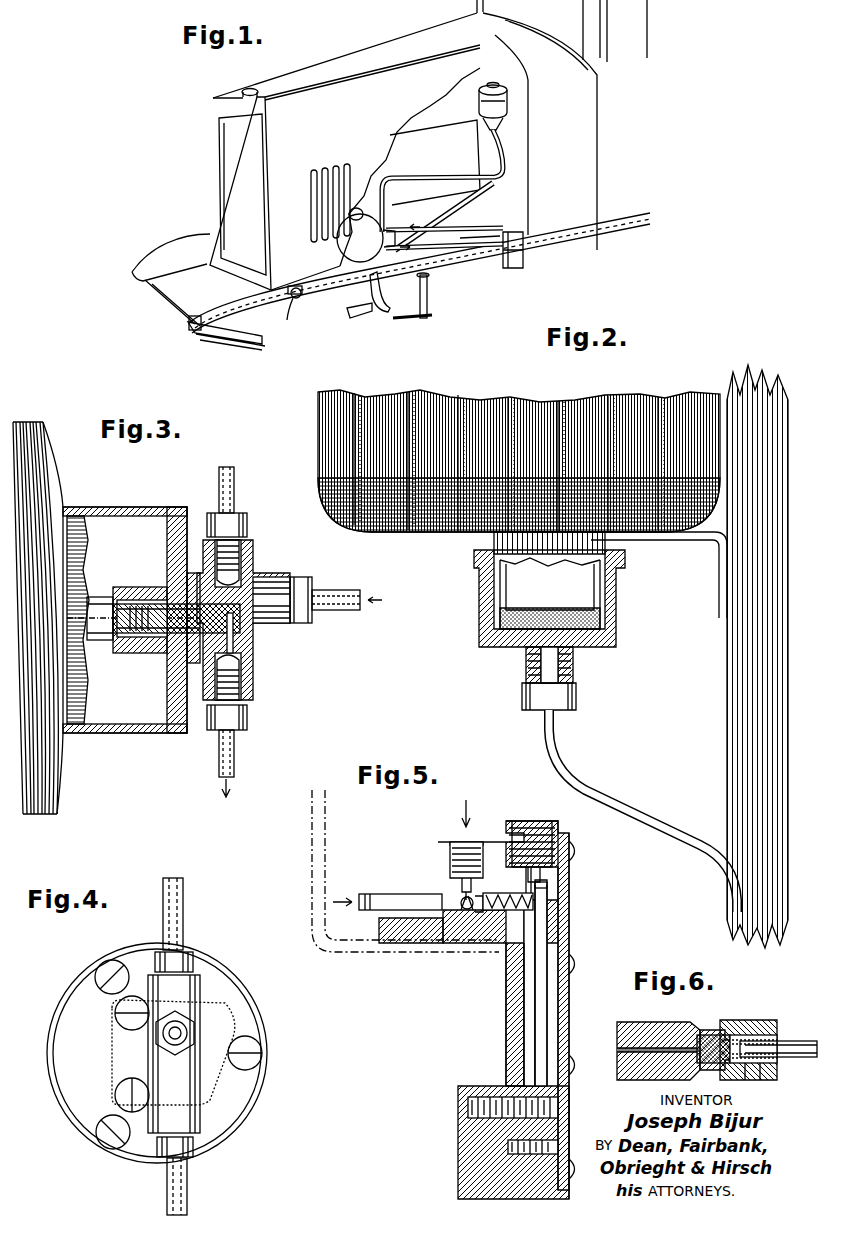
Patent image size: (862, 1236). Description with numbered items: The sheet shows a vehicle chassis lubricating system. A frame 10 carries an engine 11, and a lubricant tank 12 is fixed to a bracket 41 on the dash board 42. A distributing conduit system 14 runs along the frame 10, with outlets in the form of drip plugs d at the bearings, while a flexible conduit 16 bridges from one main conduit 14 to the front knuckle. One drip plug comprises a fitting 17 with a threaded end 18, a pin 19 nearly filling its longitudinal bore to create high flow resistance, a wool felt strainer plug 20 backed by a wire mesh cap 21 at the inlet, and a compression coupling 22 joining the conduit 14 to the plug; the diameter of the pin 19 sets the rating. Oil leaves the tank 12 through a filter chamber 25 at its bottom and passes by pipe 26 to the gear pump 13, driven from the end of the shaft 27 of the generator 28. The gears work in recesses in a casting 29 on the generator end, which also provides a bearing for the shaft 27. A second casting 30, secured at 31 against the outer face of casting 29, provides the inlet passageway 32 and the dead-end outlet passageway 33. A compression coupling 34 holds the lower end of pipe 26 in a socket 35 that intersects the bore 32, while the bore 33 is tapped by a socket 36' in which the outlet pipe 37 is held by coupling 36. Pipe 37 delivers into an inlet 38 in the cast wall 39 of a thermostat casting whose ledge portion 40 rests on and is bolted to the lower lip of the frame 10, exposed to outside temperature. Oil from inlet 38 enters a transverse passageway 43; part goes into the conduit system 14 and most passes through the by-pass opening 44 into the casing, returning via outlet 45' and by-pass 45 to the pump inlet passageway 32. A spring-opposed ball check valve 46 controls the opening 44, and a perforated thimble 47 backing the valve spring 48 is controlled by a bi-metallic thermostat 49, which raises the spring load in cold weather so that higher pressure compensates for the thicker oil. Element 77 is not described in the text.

In FIG. 1, the frame 10 is at (555, 250).
In FIG. 5, the frame 10 is at (366, 957).
In FIG. 1, the engine 11 is at (436, 116).
In FIG. 1, the lubricant tank 12 is at (508, 100).
In FIG. 2, the lubricant tank 12 is at (318, 445).
In FIG. 3, the lubricant tank 12 is at (317, 443).
In FIG. 3, the gear pump 13 is at (175, 588).
In FIG. 4, the gear pump 13 is at (138, 1050).
In FIG. 1, the distributing conduit system 14 is at (387, 317).
In FIG. 5, the distributing conduit system 14 is at (377, 894).
In FIG. 6, the distributing conduit system 14 is at (800, 1040).
In FIG. 1, the flexible conduit 16 is at (285, 296).
In FIG. 6, the fitting 17 is at (705, 1022).
In FIG. 6, the threaded end 18 is at (645, 1022).
In FIG. 6, the pin 19 is at (622, 1070).
In FIG. 6, the strainer plug 20 is at (745, 1022).
In FIG. 6, the wire mesh cap 21 is at (690, 1072).
In FIG. 6, the compression coupling 22 is at (760, 1075).
In FIG. 2, the filter chamber 25 is at (505, 578).
In FIG. 1, the pipe 26 is at (423, 181).
In FIG. 2, the pipe 26 is at (605, 784).
In FIG. 3, the pipe 26 is at (236, 492).
In FIG. 4, the pipe 26 is at (183, 908).
In FIG. 3, the shaft 27 is at (133, 620).
In FIG. 1, the generator 28 is at (343, 253).
In FIG. 3, the generator 28 is at (45, 460).
In FIG. 3, the casting 29 is at (180, 731).
In FIG. 4, the casting 29 is at (68, 989).
In FIG. 3, the second casting 30 is at (258, 655).
In FIG. 4, the second casting 30 is at (200, 1110).
In FIG. 4, the screw fastening 31 is at (118, 1022).
In FIG. 3, the inlet passageway 32 is at (200, 578).
In FIG. 3, the outlet passageway 33 is at (258, 640).
In FIG. 3, the compression coupling 34 is at (248, 525).
In FIG. 3, the socket 35 is at (253, 560).
In FIG. 4, the socket 35 is at (200, 985).
In FIG. 3, the compression coupling 36 is at (249, 713).
In FIG. 3, the socket 36' is at (258, 677).
In FIG. 1, the outlet pipe 37 is at (465, 245).
In FIG. 3, the outlet pipe 37 is at (238, 756).
In FIG. 4, the outlet pipe 37 is at (187, 1188).
In FIG. 5, the inlet 38 is at (447, 853).
In FIG. 1, the cast wall 39 is at (507, 268).
In FIG. 5, the cast wall 39 is at (508, 997).
In FIG. 5, the ledge portion 40 is at (551, 927).
In FIG. 2, the bracket 41 is at (706, 541).
In FIG. 1, the dash board 42 is at (480, 77).
In FIG. 2, the dash board 42 is at (733, 672).
In FIG. 5, the transverse passageway 43 is at (463, 902).
In FIG. 5, the by-pass opening 44 is at (479, 914).
In FIG. 1, the by-pass 45 is at (444, 216).
In FIG. 3, the by-pass 45 is at (336, 593).
In FIG. 4, the by-pass 45 is at (195, 1025).
In FIG. 5, the outlet 45' is at (532, 834).
In FIG. 5, the ball check valve 46 is at (486, 889).
In FIG. 5, the perforated thimble 47 is at (569, 882).
In FIG. 5, the valve spring 48 is at (537, 902).
In FIG. 5, the thermostat 49 is at (547, 1006).
In FIG. 1, the clamp 77 is at (298, 296).
In FIG. 1, the drip plug d is at (198, 330).